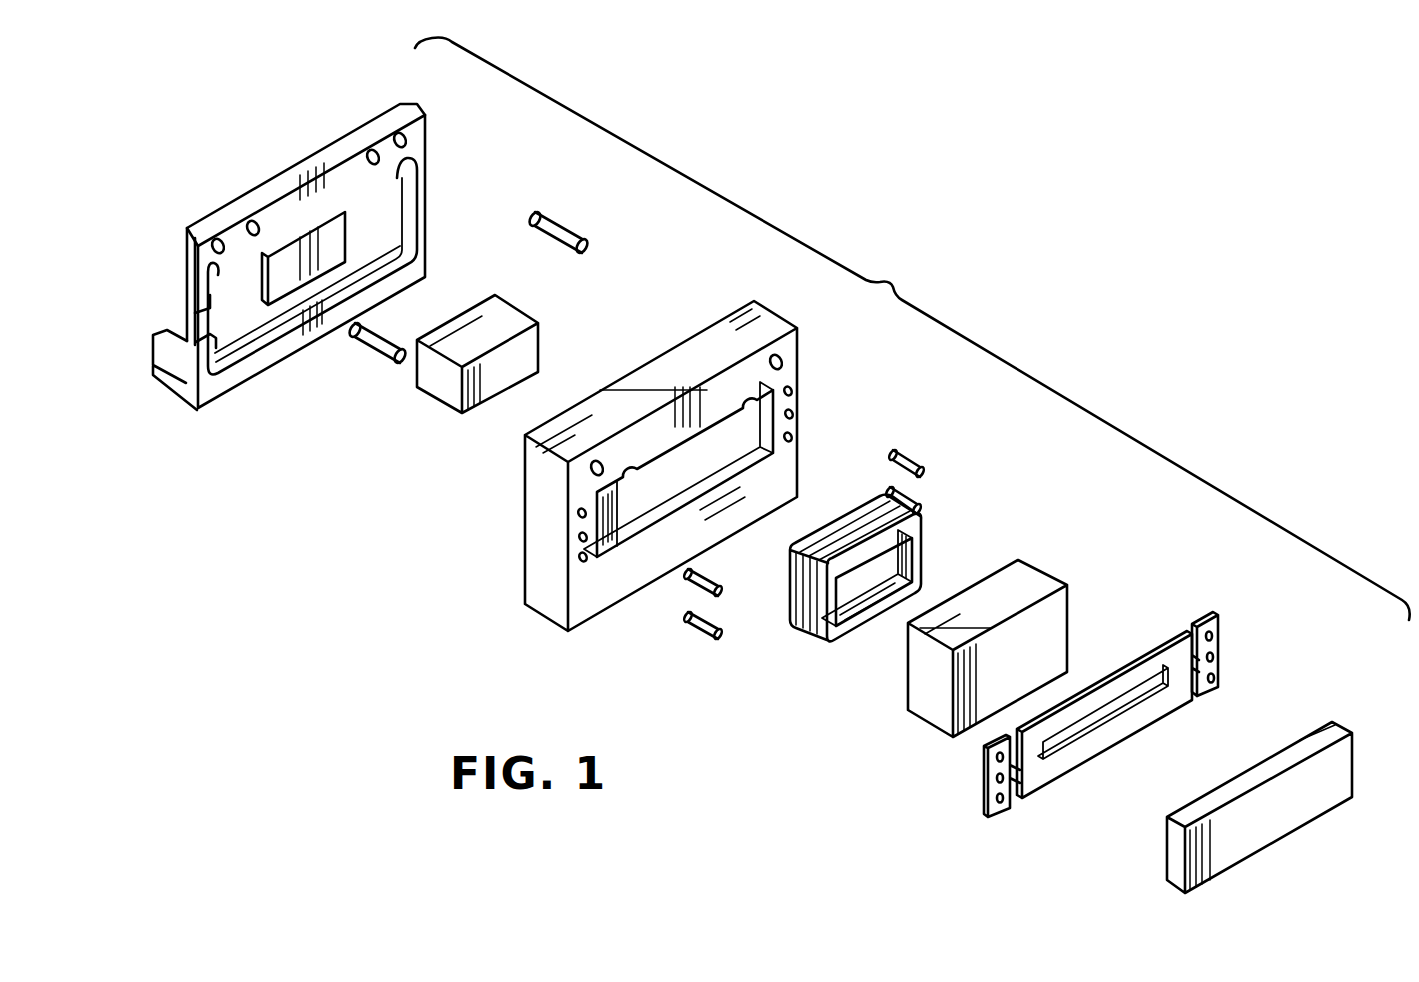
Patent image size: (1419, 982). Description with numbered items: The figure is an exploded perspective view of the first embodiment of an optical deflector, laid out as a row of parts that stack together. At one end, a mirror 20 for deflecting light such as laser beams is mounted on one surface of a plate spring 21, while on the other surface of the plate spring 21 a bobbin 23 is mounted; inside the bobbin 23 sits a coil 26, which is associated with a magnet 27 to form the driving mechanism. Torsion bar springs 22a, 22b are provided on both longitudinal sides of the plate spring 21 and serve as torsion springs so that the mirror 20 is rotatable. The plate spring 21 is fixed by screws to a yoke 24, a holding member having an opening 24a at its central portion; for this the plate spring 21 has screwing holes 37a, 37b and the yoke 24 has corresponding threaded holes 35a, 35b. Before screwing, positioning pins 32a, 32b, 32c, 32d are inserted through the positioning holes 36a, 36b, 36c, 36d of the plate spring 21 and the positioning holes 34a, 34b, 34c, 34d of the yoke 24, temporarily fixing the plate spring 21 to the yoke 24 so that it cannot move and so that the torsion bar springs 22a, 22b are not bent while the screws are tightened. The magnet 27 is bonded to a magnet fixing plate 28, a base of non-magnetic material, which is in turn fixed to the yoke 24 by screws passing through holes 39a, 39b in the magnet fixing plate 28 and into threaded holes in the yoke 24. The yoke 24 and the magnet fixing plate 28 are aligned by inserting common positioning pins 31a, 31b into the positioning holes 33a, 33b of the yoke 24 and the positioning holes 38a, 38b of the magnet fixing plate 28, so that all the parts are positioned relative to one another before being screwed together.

The mirror 20 is at (1240, 783).
The plate spring 21 is at (1120, 680).
The torsion bar spring 22a is at (1190, 665).
The torsion bar spring 22b is at (1017, 784).
The bobbin 23 is at (1035, 560).
The yoke 24 is at (661, 459).
The opening 24a is at (660, 518).
The coil 26 is at (808, 630).
The magnet 27 is at (527, 342).
The magnet fixing plate 28 is at (253, 370).
The positioning pin 31a is at (565, 226).
The positioning pin 31b is at (372, 347).
The positioning pin 32a is at (912, 458).
The positioning pin 32b is at (918, 500).
The positioning pin 32c is at (707, 578).
The positioning pin 32d is at (700, 627).
The positioning hole 33a is at (781, 362).
The positioning hole 33b is at (591, 470).
The positioning hole 34a is at (791, 389).
The positioning hole 34b is at (793, 438).
The positioning hole 34c is at (578, 514).
The positioning hole 34d is at (580, 560).
The threaded hole 35a is at (793, 414).
The threaded hole 35b is at (580, 540).
The positioning hole 36a is at (1216, 633).
The positioning hole 36b is at (1218, 680).
The positioning hole 36c is at (996, 759).
The positioning hole 36d is at (1001, 800).
The screwing hole 37a is at (1218, 655).
The screwing hole 37b is at (998, 779).
The positioning hole 38a is at (400, 133).
The positioning hole 38b is at (218, 239).
The hole 39a is at (368, 151).
The hole 39b is at (256, 221).